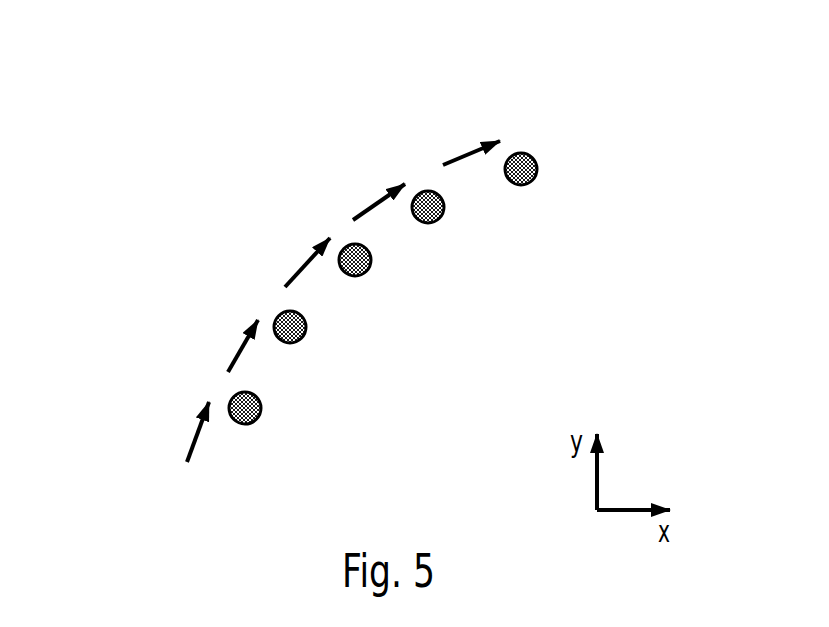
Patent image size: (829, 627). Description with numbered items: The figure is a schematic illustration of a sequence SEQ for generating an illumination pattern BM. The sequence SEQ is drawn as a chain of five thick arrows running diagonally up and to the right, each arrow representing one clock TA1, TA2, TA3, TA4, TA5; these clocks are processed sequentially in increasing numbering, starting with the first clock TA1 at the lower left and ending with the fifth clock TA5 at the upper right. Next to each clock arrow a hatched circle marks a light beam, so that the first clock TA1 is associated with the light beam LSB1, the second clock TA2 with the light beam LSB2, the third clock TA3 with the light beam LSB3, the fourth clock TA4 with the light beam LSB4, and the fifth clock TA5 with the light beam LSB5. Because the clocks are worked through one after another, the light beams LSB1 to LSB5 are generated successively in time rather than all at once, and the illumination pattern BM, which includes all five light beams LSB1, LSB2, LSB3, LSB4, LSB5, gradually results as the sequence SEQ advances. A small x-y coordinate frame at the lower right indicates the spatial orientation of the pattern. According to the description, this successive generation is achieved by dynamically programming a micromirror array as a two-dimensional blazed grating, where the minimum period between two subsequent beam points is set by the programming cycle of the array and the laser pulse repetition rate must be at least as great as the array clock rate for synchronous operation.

The sequence SEQ is at (154, 118).
The clock TA1 is at (178, 428).
The clock TA2 is at (227, 345).
The clock TA3 is at (297, 259).
The clock TA4 is at (367, 197).
The clock TA5 is at (464, 147).
The illumination pattern BM is at (567, 140).
The light beam LSB1 is at (262, 416).
The light beam LSB2 is at (308, 333).
The light beam LSB3 is at (371, 268).
The light beam LSB4 is at (444, 215).
The light beam LSB5 is at (538, 177).